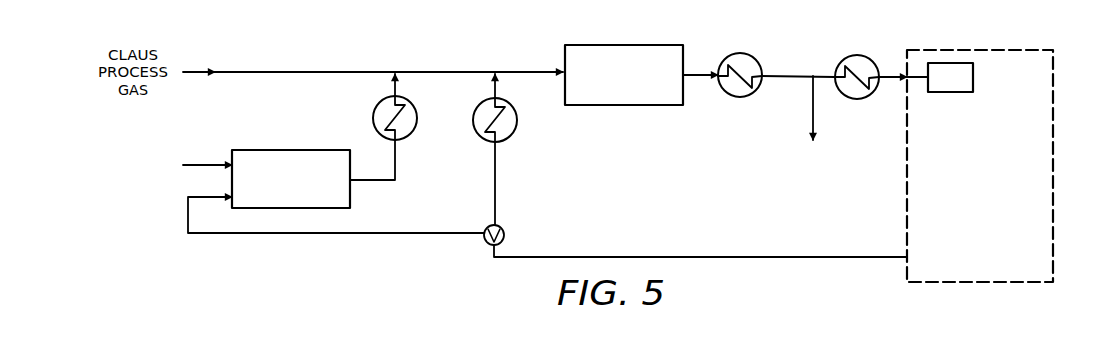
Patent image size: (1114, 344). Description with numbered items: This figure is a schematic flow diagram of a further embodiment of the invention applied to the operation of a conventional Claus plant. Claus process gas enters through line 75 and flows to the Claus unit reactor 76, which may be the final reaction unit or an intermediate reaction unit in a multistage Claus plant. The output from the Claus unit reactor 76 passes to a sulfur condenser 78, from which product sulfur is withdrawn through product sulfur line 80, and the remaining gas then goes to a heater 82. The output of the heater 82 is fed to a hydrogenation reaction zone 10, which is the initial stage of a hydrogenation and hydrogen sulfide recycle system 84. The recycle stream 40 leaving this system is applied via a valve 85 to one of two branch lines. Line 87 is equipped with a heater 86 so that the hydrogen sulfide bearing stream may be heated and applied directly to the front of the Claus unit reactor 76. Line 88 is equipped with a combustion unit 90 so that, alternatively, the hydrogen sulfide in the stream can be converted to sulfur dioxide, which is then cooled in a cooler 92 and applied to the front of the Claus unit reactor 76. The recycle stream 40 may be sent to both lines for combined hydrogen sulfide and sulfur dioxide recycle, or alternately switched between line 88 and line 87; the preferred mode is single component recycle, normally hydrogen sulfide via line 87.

The line 75 is at (262, 72).
The Claus unit reactor 76 is at (582, 45).
The sulfur condenser 78 is at (730, 96).
The product sulfur line 80 is at (813, 100).
The heater 82 is at (868, 59).
The hydrogenation and hydrogen sulfide recycle system 84 is at (1053, 56).
The hydrogenation reaction zone 10 is at (974, 85).
The cooler 92 is at (414, 106).
The heater 86 is at (474, 138).
The combustion unit 90 is at (234, 150).
The line 88 is at (372, 233).
The line 87 is at (498, 186).
The valve 85 is at (505, 232).
The recycle stream 40 is at (762, 257).